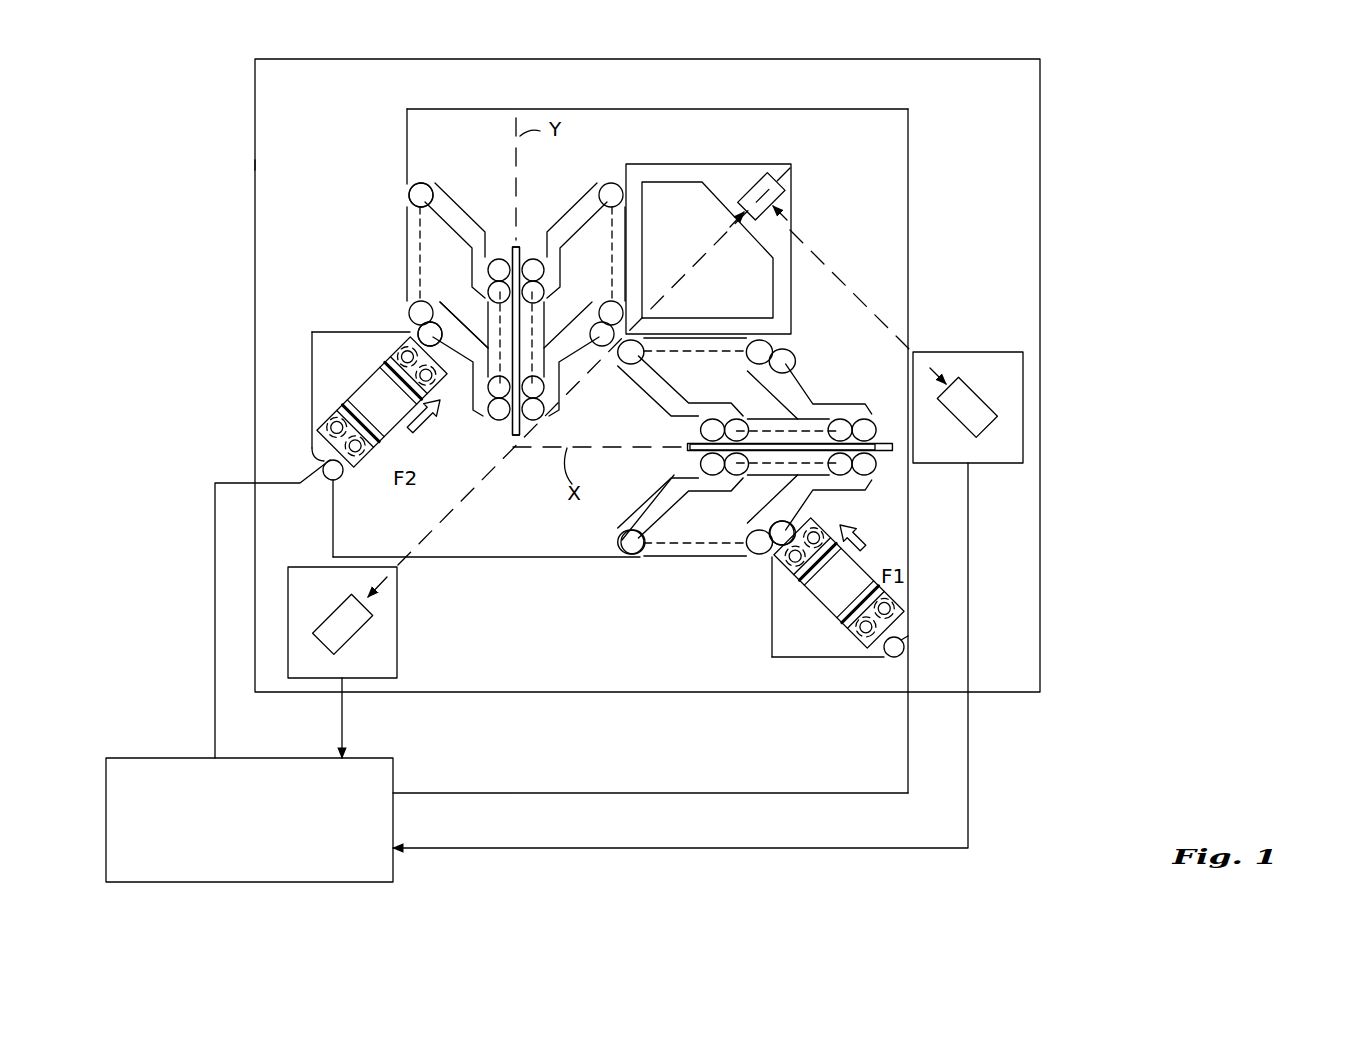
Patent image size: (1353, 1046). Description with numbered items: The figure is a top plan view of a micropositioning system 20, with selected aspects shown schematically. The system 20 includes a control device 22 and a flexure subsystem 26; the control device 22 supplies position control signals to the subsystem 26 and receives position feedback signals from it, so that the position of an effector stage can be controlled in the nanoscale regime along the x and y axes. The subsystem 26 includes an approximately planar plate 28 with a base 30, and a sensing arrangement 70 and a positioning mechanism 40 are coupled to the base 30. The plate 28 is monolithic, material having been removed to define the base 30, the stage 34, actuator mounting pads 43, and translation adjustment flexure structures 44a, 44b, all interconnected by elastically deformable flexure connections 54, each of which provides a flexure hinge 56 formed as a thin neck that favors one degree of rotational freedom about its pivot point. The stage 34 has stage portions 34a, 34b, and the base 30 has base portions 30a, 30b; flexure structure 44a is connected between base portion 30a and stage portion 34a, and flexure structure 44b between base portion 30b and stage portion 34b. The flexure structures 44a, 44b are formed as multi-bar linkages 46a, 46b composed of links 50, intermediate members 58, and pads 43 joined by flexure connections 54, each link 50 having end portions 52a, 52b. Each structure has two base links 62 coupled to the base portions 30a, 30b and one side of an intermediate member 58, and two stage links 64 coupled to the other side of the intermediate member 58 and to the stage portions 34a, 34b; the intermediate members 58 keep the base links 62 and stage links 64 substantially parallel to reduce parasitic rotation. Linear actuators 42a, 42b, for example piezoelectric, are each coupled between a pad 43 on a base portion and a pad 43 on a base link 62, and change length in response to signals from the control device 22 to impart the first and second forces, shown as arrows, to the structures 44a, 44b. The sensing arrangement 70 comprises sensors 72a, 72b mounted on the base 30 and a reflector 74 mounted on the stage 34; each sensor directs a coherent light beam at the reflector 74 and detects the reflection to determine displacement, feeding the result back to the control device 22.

The positioning system 20 is at (581, 375).
The control device 22 is at (537, 672).
The flexure subsystem 26 is at (253, 433).
The plate 28 is at (610, 432).
The base 30 is at (255, 125).
The base portion 30a is at (787, 607).
The base portion 30b is at (361, 356).
The stage 34 is at (596, 342).
The stage portion 34a is at (742, 318).
The stage portion 34b is at (648, 262).
The positioning mechanism 40 is at (532, 527).
The actuator 42a is at (813, 607).
The actuator 42b is at (355, 385).
The actuator mounting pads 43 is at (380, 340).
The translation adjustment flexure structure 44a is at (862, 380).
The translation adjustment flexure structure 44b is at (588, 188).
The multi-bar linkage 46a is at (625, 525).
The multi-bar linkage 46b is at (482, 405).
The link 50 is at (480, 225).
The end portion 52a is at (585, 300).
The end portion 52b is at (860, 430).
The flexure connection 54 is at (418, 184).
The flexure hinge 56 is at (609, 303).
The intermediate member 58 is at (515, 443).
The base link 62 is at (455, 200).
The stage link 64 is at (560, 240).
The sensing arrangement 70 is at (397, 668).
The sensor 72a is at (648, 411).
The sensor 72b is at (965, 352).
The reflector 74 is at (790, 190).